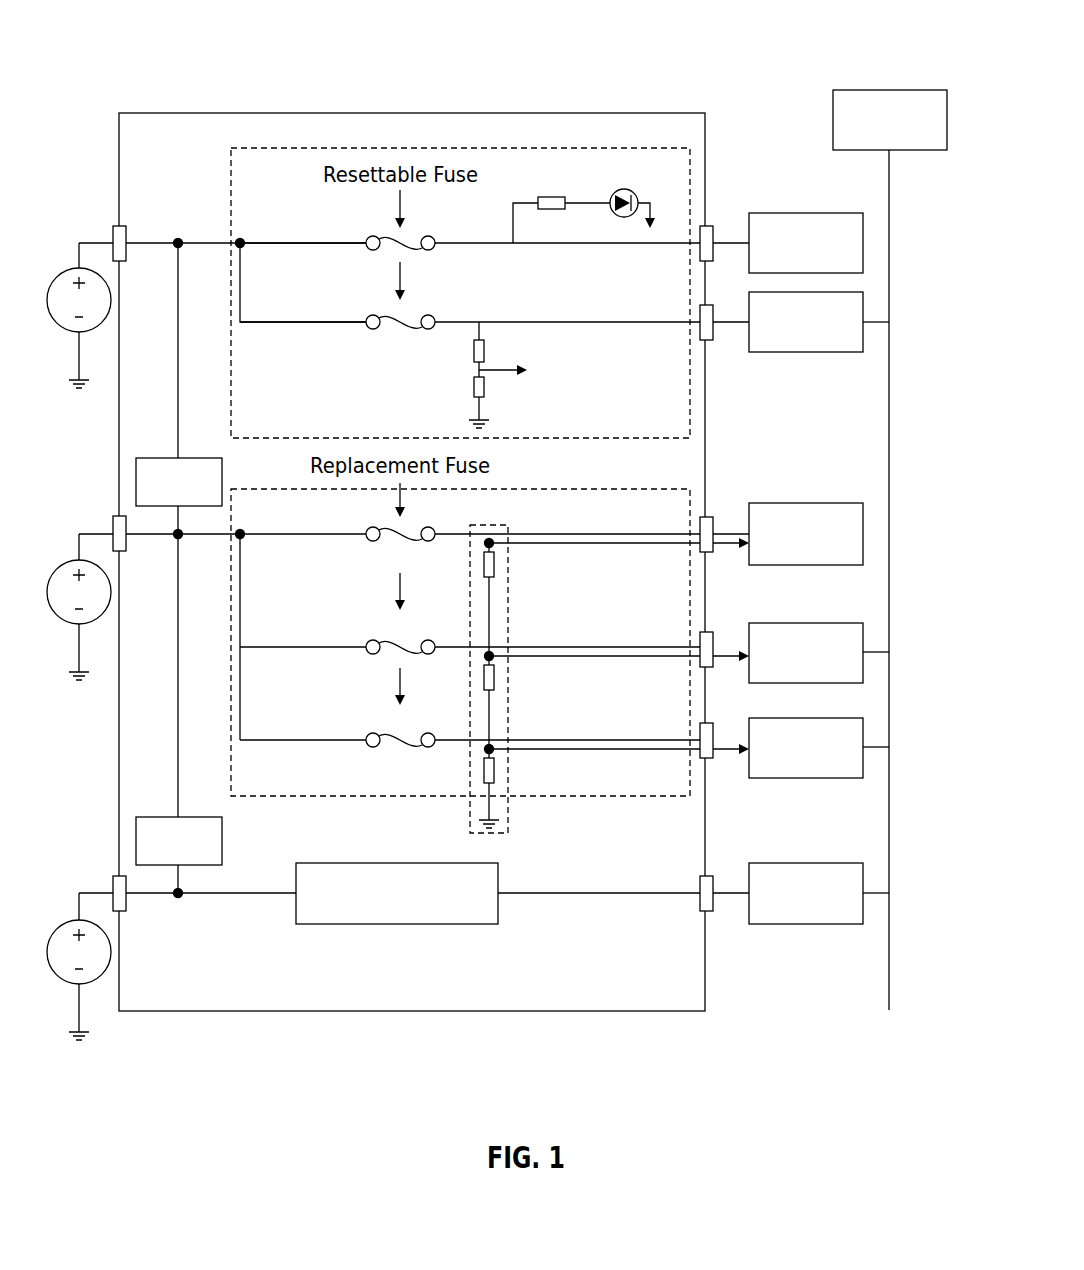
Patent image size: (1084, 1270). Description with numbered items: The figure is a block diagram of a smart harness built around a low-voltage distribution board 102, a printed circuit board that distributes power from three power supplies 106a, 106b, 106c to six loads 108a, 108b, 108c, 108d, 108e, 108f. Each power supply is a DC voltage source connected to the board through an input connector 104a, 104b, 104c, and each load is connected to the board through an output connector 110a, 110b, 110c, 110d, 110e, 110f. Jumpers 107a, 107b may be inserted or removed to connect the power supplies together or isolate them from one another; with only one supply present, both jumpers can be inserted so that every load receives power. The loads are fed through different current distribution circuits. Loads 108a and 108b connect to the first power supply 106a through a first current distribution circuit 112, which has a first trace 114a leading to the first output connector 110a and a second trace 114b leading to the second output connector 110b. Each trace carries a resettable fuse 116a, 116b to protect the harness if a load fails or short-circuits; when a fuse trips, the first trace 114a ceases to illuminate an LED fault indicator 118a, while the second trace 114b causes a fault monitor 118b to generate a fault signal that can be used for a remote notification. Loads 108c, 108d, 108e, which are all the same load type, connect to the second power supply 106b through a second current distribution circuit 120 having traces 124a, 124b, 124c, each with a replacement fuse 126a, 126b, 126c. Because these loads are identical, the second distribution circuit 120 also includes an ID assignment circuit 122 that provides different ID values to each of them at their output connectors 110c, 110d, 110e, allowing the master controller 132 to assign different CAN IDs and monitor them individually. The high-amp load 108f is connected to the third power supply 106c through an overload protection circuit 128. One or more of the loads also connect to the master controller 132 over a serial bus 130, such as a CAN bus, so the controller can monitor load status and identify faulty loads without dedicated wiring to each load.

The low-voltage distribution board 102 is at (185, 113).
The input connector 104a is at (118, 226).
The input connector 104b is at (118, 516).
The input connector 104c is at (124, 912).
The first power supply 106a is at (60, 270).
The second power supply 106b is at (60, 562).
The third power supply 106c is at (60, 922).
The jumper 107a is at (153, 458).
The jumper 107b is at (153, 817).
The load 108a is at (787, 213).
The load 108b is at (782, 352).
The load 108c is at (787, 503).
The load 108d is at (863, 670).
The load 108e is at (782, 778).
The load 108f is at (787, 863).
The first output connector 110a is at (708, 226).
The second output connector 110b is at (708, 340).
The output connector 110c is at (708, 517).
The output connector 110d is at (708, 632).
The output connector 110e is at (708, 758).
The output connector 110f is at (700, 908).
The first current distribution circuit 112 is at (300, 148).
The first trace 114a is at (346, 243).
The second trace 114b is at (346, 322).
The resettable fuse 116a is at (431, 252).
The resettable fuse 116b is at (431, 315).
The LED fault indicator 118a is at (560, 158).
The fault monitor 118b is at (474, 385).
The second current distribution circuit 120 is at (250, 800).
The ID assignment circuit 122 is at (495, 525).
The trace 124a is at (660, 540).
The trace 124b is at (660, 655).
The trace 124c is at (660, 747).
The replacement fuse 126a is at (366, 528).
The replacement fuse 126b is at (366, 641).
The replacement fuse 126c is at (366, 734).
The overload protection circuit 128 is at (430, 924).
The serial bus 130 is at (863, 1070).
The master controller 132 is at (897, 90).